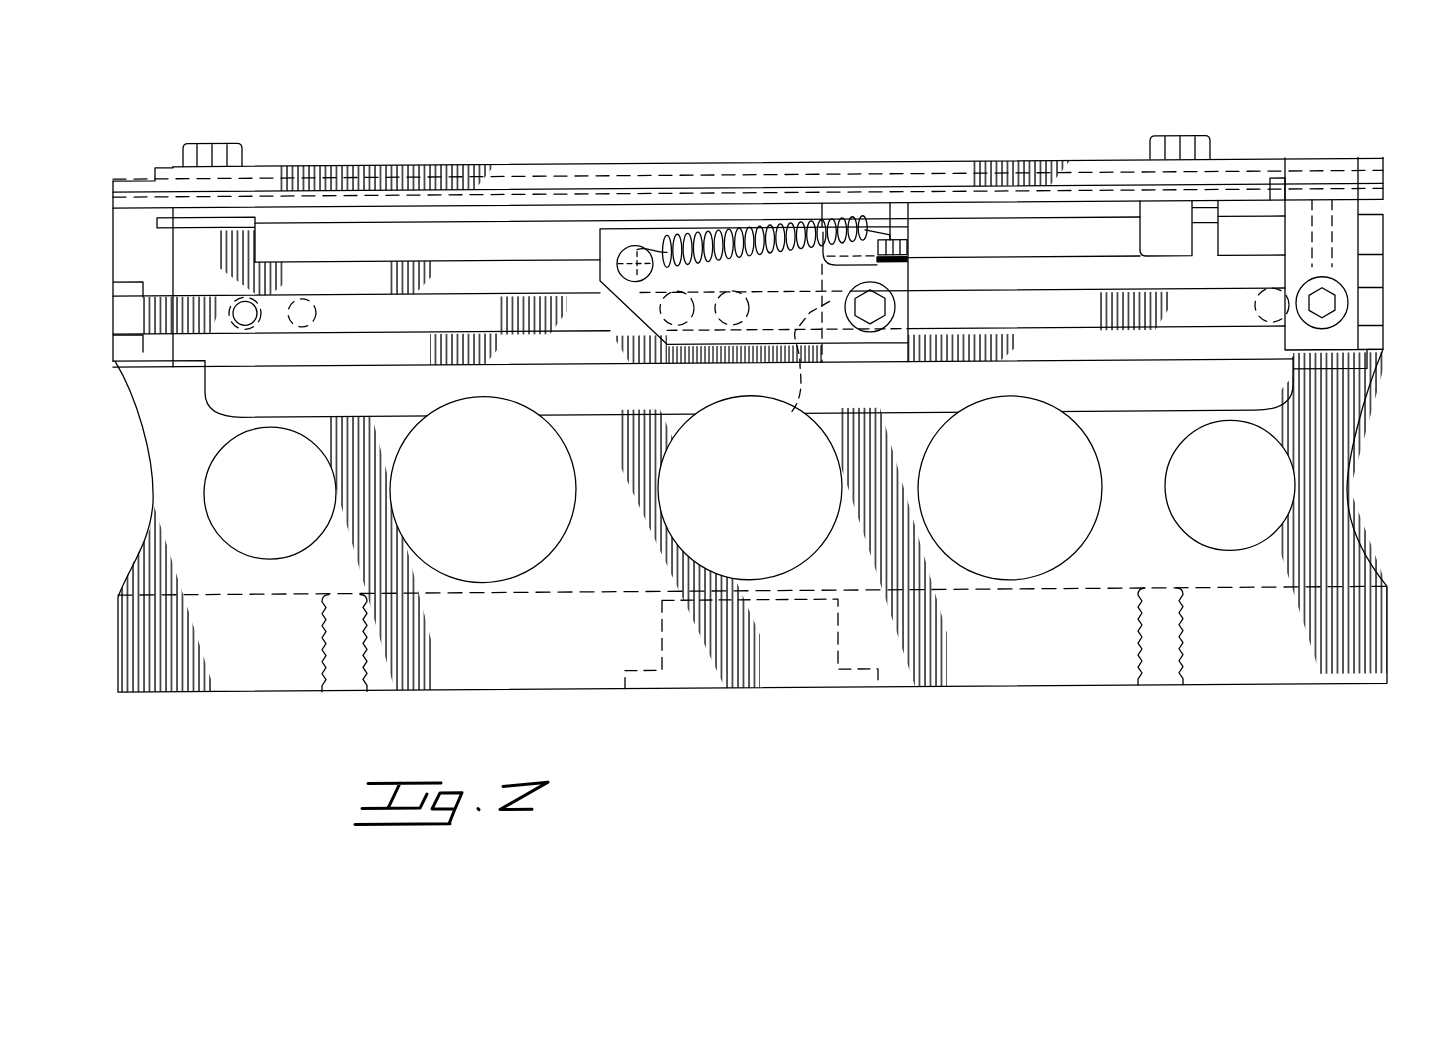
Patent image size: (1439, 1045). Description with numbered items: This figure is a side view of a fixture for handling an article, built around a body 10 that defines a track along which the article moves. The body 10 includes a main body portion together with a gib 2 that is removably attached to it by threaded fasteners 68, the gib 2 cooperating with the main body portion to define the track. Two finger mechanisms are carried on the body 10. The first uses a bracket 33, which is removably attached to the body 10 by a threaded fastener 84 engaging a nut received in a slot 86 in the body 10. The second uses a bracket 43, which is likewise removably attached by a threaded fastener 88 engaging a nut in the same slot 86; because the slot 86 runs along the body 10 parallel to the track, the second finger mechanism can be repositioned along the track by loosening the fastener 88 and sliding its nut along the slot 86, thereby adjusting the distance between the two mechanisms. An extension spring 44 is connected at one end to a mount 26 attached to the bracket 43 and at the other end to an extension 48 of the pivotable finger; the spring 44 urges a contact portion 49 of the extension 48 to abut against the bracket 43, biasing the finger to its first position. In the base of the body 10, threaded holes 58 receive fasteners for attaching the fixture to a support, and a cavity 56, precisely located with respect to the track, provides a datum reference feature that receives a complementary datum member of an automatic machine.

The gib 2 is at (584, 168).
The body 10 is at (570, 645).
The mount 26 is at (600, 249).
The bracket 33 is at (1363, 253).
The bracket 43 is at (788, 422).
The extension spring 44 is at (762, 232).
The extension 48 is at (908, 252).
The contact portion 49 is at (846, 236).
The cavity 56 is at (810, 609).
The threaded holes 58 is at (352, 658).
The threaded fasteners 68 is at (214, 145).
The threaded fastener 84 is at (1340, 321).
The slot 86 is at (130, 318).
The threaded fastener 88 is at (898, 312).